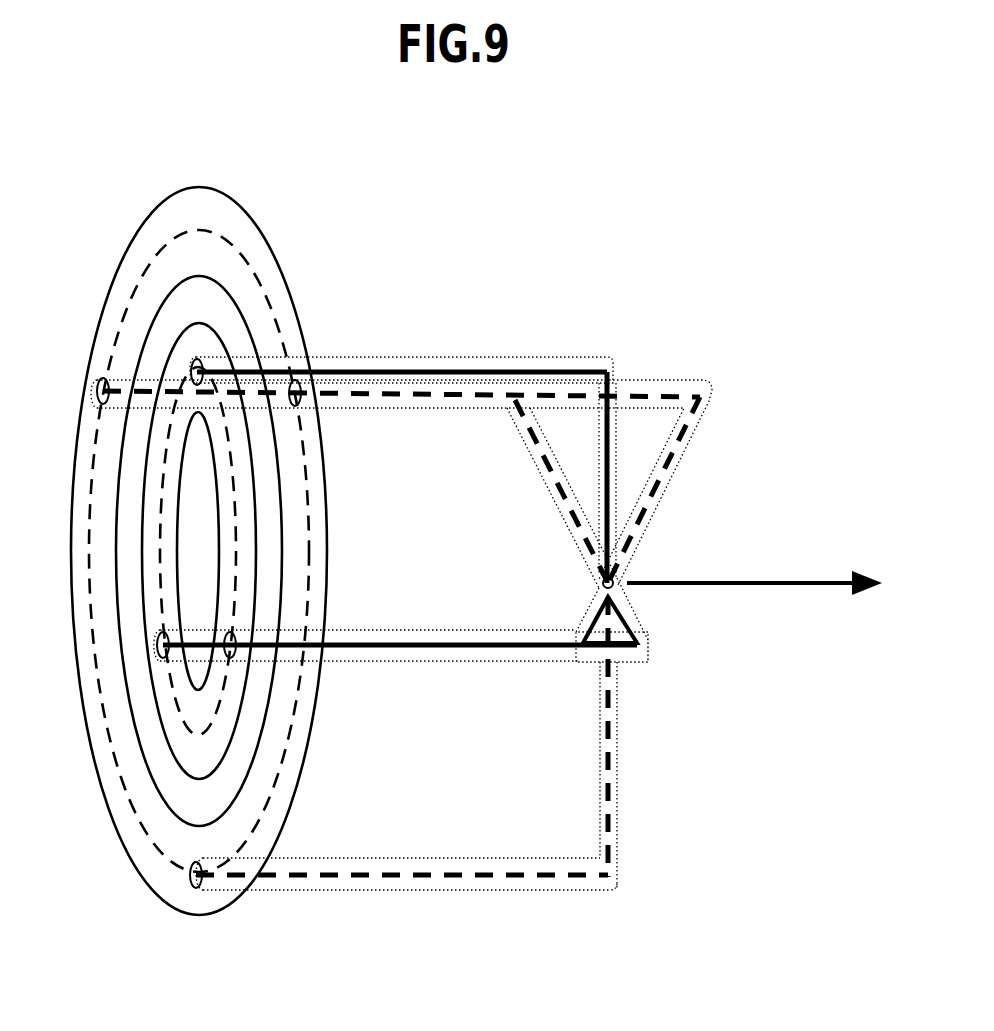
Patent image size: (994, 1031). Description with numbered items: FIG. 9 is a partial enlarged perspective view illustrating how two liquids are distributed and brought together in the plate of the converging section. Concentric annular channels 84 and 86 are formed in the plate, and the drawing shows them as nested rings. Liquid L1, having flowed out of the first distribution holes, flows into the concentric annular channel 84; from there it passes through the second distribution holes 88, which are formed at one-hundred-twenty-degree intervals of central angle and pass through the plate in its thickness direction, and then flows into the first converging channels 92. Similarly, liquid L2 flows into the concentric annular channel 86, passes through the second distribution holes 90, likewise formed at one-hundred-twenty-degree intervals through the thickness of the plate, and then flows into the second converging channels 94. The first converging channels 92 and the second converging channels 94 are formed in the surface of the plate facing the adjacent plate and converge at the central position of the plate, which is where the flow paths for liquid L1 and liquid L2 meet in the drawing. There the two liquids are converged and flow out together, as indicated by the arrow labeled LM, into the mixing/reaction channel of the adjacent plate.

The concentric annular channel 84 is at (242, 227).
The concentric annular channel 86 is at (137, 363).
The second distribution hole 88 is at (690, 385).
The second distribution hole 90 is at (433, 655).
The first converging channel 92 is at (683, 457).
The second converging channel 94 is at (640, 455).
The liquid L1 is at (480, 398).
The liquid L2 is at (443, 368).
The measurement light LM is at (793, 588).